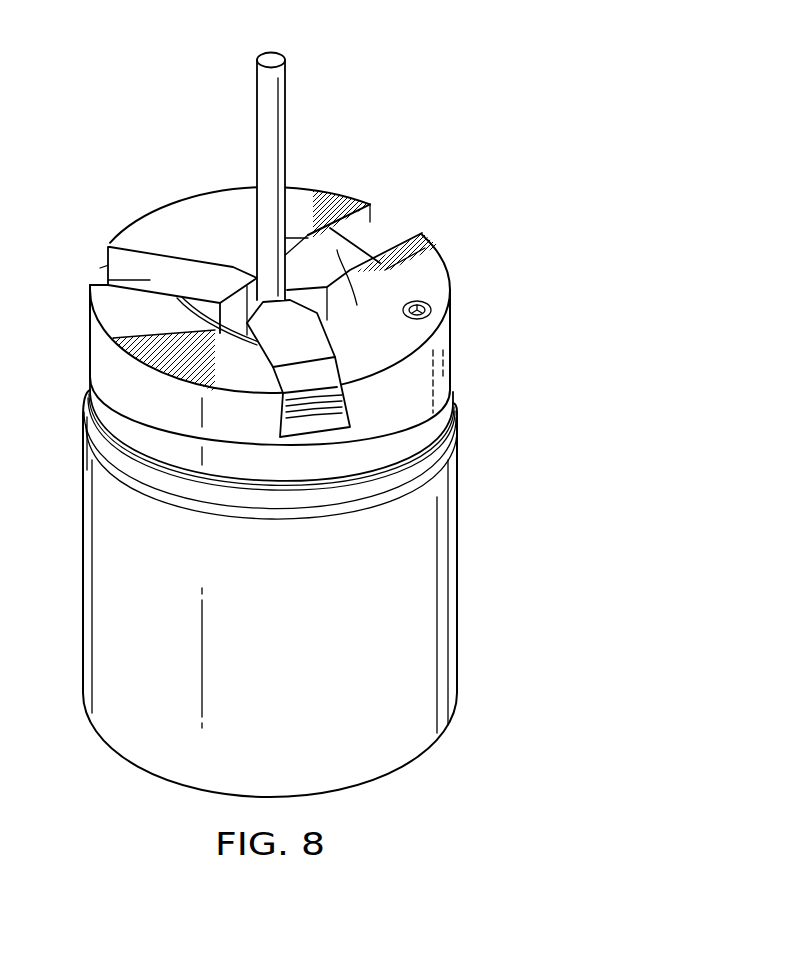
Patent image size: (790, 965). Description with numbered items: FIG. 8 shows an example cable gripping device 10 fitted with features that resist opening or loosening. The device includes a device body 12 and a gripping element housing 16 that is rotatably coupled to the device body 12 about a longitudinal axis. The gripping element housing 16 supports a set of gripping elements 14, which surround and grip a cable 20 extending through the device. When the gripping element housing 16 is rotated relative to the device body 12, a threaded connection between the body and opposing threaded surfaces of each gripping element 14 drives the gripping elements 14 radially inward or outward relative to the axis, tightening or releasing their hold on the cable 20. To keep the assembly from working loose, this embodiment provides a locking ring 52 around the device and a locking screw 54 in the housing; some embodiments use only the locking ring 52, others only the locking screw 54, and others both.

The cable gripping device 10 is at (421, 140).
The device body 12 is at (457, 612).
The gripping elements 14 is at (135, 268).
The gripping element housing 16 is at (163, 215).
The cable 20 is at (257, 126).
The locking ring 52 is at (340, 458).
The locking screw 54 is at (420, 301).